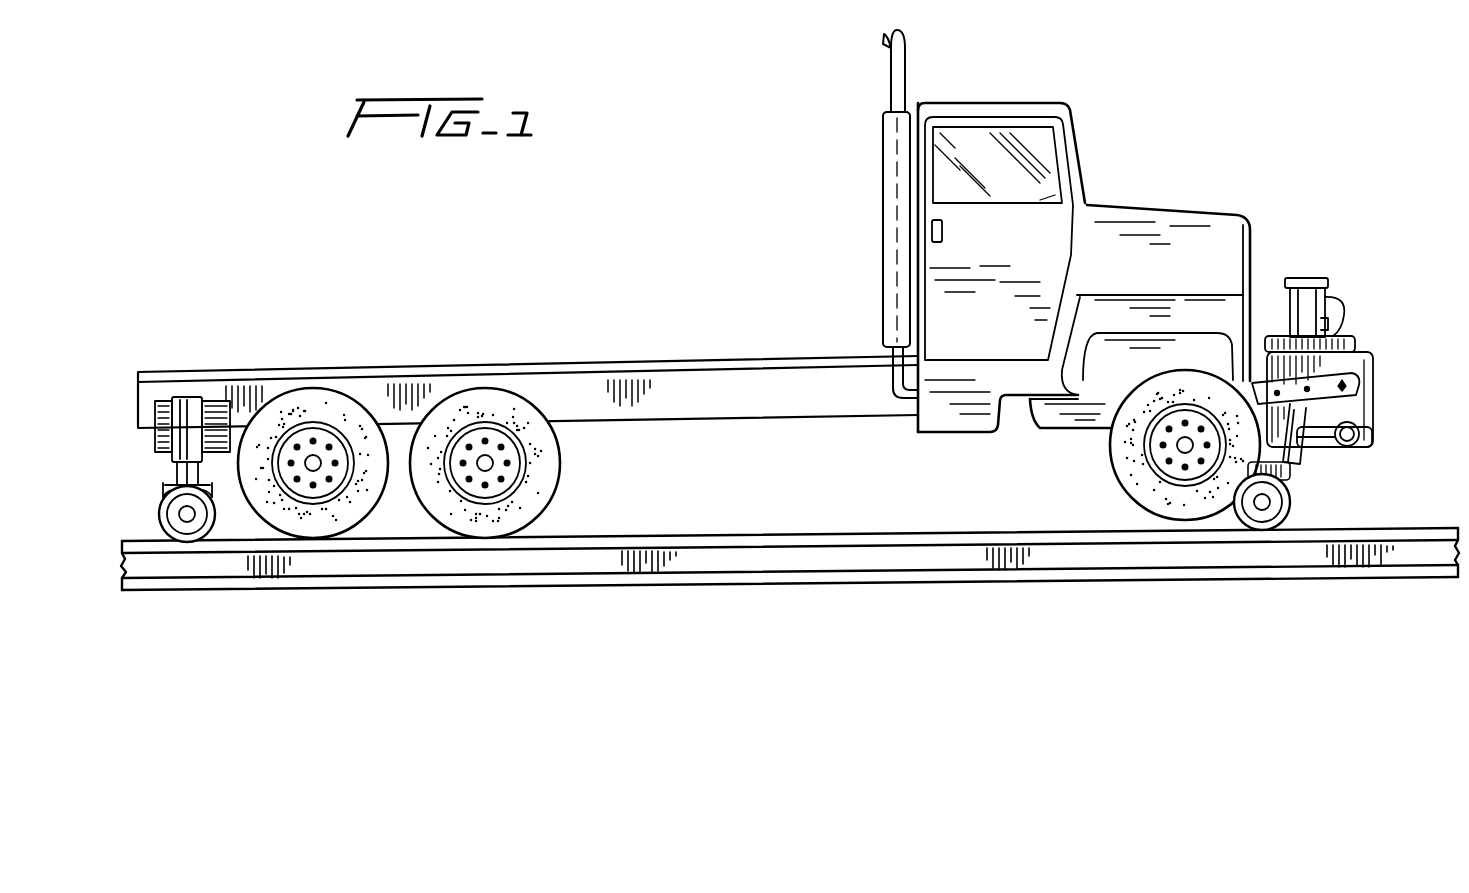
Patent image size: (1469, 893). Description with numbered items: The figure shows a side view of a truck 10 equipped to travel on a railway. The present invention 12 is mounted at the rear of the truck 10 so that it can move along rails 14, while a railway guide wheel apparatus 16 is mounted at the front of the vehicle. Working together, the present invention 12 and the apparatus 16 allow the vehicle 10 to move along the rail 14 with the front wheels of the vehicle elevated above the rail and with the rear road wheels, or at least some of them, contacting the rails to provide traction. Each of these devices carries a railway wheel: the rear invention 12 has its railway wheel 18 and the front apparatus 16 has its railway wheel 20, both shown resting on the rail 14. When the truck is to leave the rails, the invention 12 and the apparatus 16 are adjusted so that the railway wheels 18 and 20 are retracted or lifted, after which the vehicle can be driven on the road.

The truck 10 is at (1170, 212).
The present invention 12 is at (165, 433).
The rails 14 is at (687, 540).
The railway guide wheel apparatus 16 is at (1348, 338).
The railway wheel 18 is at (156, 513).
The railway wheel 20 is at (1296, 507).